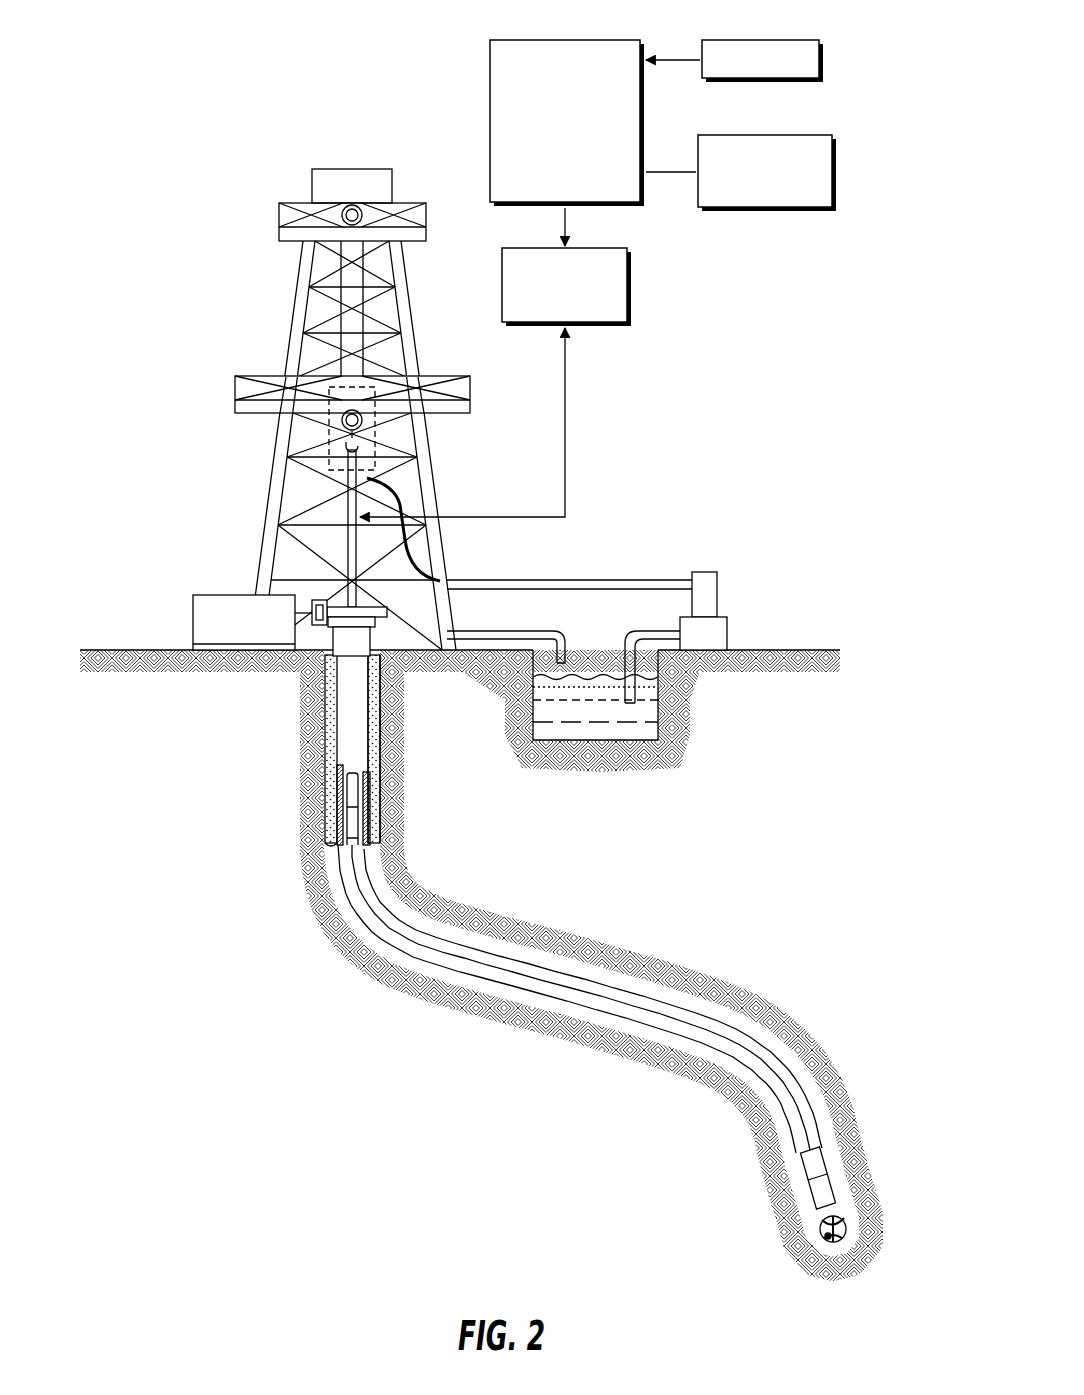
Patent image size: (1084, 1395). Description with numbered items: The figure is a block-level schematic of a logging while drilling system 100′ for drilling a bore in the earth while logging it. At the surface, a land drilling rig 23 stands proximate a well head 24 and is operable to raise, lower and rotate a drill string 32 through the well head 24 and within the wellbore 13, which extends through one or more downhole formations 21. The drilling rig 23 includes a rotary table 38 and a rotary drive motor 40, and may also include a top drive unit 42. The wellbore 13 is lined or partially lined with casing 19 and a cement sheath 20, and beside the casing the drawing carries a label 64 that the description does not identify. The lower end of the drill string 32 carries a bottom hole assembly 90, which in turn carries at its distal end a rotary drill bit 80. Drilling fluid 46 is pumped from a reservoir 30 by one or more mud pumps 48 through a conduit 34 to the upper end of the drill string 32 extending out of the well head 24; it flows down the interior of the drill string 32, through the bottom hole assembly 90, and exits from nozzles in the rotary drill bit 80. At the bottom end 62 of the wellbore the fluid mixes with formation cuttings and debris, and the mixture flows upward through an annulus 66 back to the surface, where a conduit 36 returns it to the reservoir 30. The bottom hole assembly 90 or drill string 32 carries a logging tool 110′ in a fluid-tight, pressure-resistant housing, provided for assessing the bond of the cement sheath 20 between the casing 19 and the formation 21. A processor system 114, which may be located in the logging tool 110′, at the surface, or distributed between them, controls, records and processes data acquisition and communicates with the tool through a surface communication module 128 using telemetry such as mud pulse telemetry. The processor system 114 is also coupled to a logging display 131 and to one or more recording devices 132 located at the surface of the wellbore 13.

The logging while drilling system 100′ is at (163, 46).
The processor system 114 is at (488, 72).
The logging display 131 is at (747, 38).
The recording devices 132 is at (745, 135).
The surface communication module 128 is at (590, 248).
The land drilling rig 23 is at (288, 322).
The top drive unit 42 is at (327, 433).
The rotary drive motor 40 is at (193, 620).
The rotary table 38 is at (387, 611).
The well head 24 is at (322, 634).
The conduit 34 is at (637, 580).
The conduit 36 is at (548, 632).
The mud pumps 48 is at (720, 594).
The drilling fluid 46 is at (640, 728).
The reservoir 30 is at (612, 741).
The casing 64 is at (332, 755).
The cement sheath 20 is at (378, 768).
The casing 19 is at (368, 805).
The logging tool 110′ is at (353, 845).
The annulus 66 is at (340, 857).
The drill string 32 is at (366, 919).
The wellbore 13 is at (458, 945).
The downhole formation 21 is at (630, 984).
The bottom hole assembly 90 is at (836, 1188).
The rotary drill bit 80 is at (850, 1225).
The bottom end 62 is at (825, 1243).